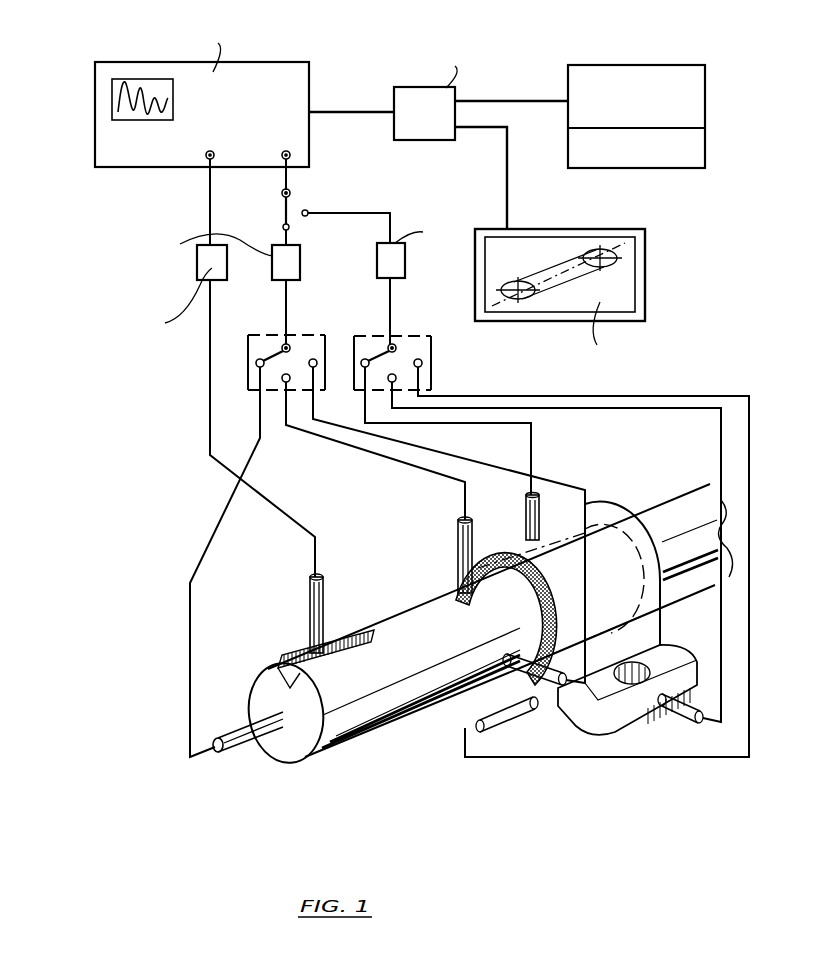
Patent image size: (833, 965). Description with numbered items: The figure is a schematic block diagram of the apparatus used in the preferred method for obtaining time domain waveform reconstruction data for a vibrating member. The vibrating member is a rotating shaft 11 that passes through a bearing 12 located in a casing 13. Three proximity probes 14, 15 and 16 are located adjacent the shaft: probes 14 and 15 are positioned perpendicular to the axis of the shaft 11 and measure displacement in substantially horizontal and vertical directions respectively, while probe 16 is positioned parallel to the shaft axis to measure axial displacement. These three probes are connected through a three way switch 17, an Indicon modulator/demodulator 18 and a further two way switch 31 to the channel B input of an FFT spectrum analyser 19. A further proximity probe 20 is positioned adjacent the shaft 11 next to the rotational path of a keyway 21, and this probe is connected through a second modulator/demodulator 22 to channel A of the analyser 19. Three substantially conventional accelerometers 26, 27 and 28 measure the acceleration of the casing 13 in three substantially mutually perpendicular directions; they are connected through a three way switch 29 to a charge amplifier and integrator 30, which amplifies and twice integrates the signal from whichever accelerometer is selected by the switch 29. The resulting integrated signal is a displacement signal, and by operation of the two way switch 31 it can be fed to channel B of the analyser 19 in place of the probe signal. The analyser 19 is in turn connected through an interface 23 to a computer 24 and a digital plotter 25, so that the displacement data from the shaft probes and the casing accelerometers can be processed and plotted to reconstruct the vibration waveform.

The rotating shaft 11 is at (394, 690).
The bearing 12 is at (523, 602).
The casing 13 is at (607, 517).
The proximity probe 14 is at (462, 562).
The proximity probe 15 is at (523, 677).
The proximity probe 16 is at (240, 735).
The three way switch 17 is at (300, 346).
The modulator/demodulator 18 is at (290, 268).
The FFT spectrum analyser 19 is at (145, 162).
The proximity probe 20 is at (323, 612).
The keyway 21 is at (290, 672).
The modulator/demodulator 22 is at (199, 264).
The interface 23 is at (431, 143).
The computer 24 is at (609, 155).
The digital plotter 25 is at (566, 303).
The accelerometer 26 is at (505, 715).
The accelerometer 27 is at (680, 718).
The accelerometer 28 is at (528, 518).
The three way switch 29 is at (410, 346).
The charge amplifier and integrator 30 is at (404, 263).
The two way switch 31 is at (297, 203).